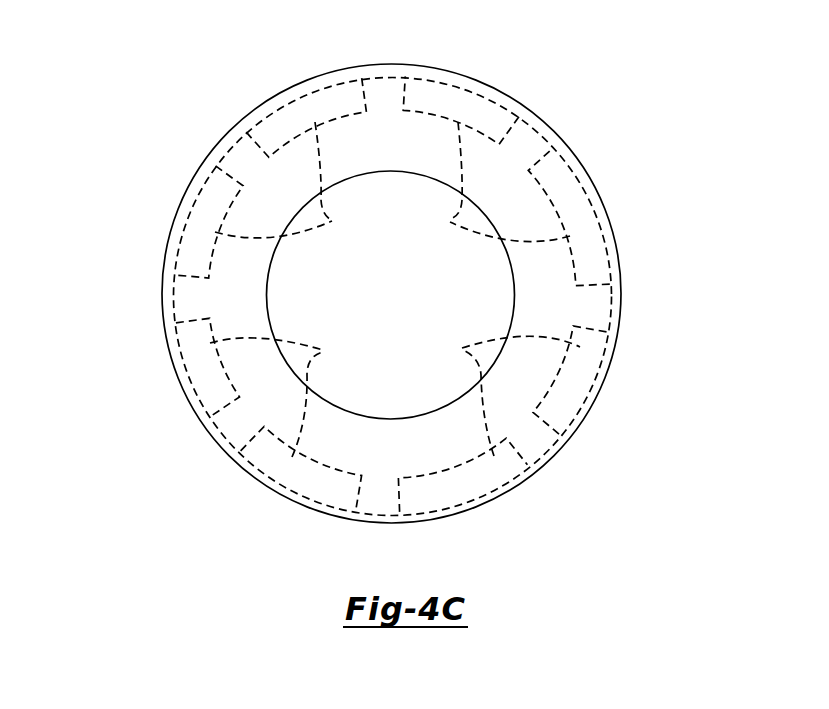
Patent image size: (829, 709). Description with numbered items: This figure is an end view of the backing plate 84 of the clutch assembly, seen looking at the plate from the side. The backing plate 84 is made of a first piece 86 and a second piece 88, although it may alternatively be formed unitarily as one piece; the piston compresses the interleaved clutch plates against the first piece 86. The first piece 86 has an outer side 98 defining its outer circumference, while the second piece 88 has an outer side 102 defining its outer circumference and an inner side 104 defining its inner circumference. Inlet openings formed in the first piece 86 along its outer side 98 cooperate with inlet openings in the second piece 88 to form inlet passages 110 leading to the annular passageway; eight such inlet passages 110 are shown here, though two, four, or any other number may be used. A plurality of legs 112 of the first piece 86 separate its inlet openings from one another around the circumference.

The backing plate 84 is at (646, 188).
The first piece 86 is at (201, 408).
The second piece 88 is at (582, 420).
The outer side 98 is at (186, 243).
The outer side 102 is at (455, 520).
The inner side 104 is at (390, 172).
The inlet passages 110 is at (393, 92).
The legs 112 is at (395, 289).